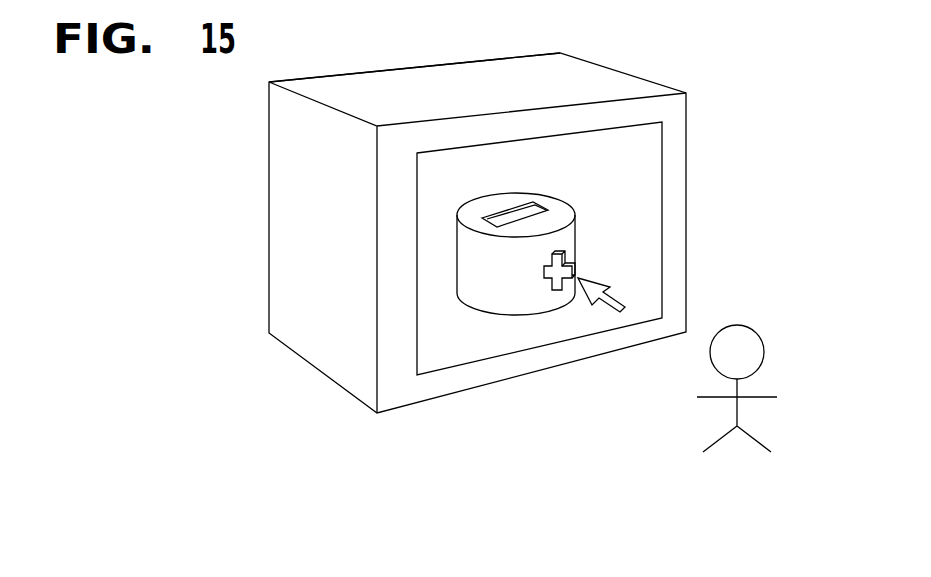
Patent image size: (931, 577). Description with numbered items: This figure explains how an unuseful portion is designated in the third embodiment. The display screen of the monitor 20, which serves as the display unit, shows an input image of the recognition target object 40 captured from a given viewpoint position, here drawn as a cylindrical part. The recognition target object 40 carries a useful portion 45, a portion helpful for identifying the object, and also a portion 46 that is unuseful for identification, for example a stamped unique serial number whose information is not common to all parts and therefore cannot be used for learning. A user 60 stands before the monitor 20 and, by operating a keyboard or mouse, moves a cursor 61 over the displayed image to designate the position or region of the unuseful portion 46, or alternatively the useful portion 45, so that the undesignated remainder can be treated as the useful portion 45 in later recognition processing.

The monitor 20 is at (580, 72).
The recognition target object 40 is at (556, 205).
The unuseful portion 46 is at (506, 214).
The useful portion 45 is at (565, 252).
The cursor 61 is at (633, 291).
The user 60 is at (742, 327).